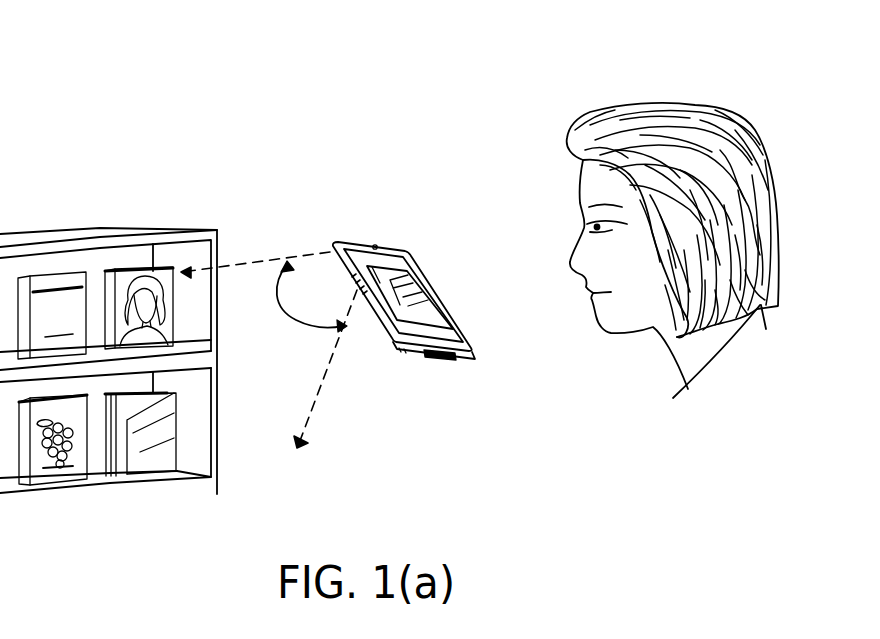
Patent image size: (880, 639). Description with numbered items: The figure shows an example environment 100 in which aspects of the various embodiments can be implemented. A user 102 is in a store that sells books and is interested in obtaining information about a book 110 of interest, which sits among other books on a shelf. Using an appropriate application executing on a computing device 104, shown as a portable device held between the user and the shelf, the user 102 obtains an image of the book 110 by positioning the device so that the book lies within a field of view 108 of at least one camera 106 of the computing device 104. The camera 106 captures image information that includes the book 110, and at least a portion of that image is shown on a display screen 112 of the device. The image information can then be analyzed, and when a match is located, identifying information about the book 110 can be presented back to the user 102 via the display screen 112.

The environment 100 is at (70, 86).
The user 102 is at (528, 161).
The computing device 104 is at (412, 354).
The camera 106 is at (375, 245).
The field of view 108 is at (302, 299).
The book 110 is at (160, 470).
The display screen 112 is at (433, 283).